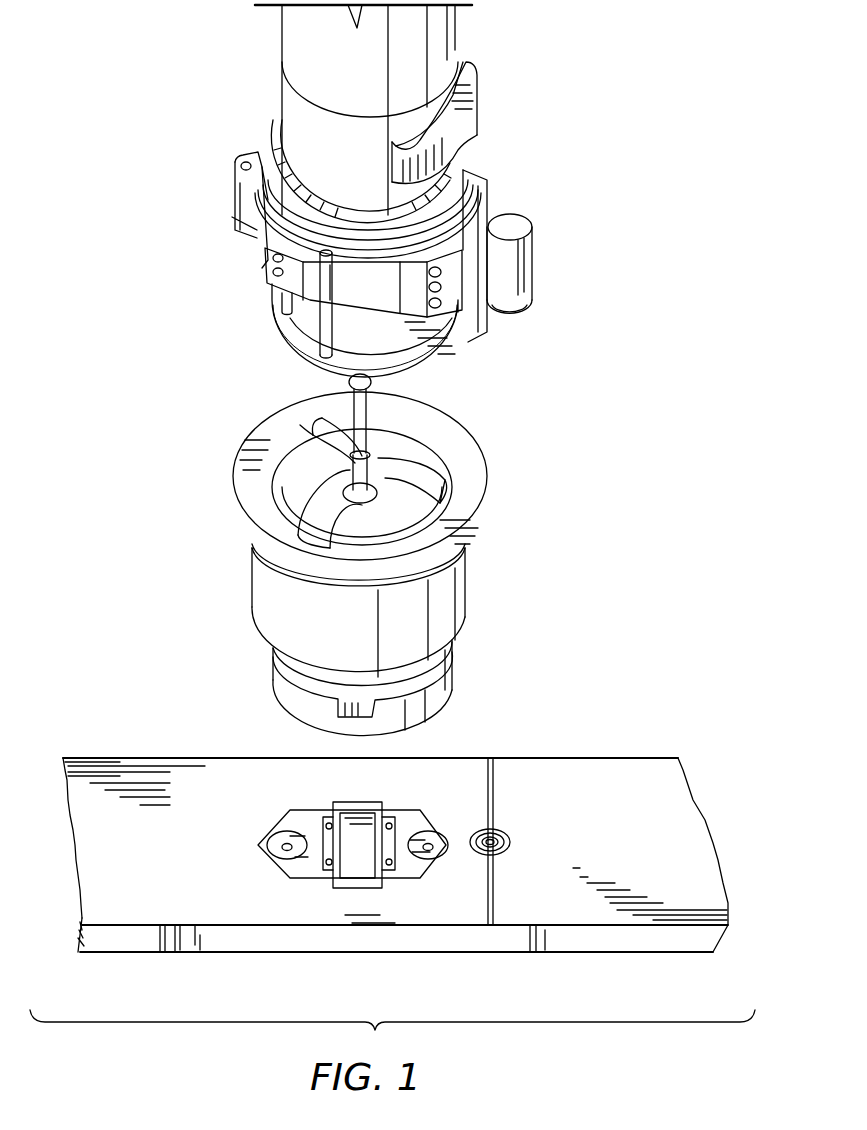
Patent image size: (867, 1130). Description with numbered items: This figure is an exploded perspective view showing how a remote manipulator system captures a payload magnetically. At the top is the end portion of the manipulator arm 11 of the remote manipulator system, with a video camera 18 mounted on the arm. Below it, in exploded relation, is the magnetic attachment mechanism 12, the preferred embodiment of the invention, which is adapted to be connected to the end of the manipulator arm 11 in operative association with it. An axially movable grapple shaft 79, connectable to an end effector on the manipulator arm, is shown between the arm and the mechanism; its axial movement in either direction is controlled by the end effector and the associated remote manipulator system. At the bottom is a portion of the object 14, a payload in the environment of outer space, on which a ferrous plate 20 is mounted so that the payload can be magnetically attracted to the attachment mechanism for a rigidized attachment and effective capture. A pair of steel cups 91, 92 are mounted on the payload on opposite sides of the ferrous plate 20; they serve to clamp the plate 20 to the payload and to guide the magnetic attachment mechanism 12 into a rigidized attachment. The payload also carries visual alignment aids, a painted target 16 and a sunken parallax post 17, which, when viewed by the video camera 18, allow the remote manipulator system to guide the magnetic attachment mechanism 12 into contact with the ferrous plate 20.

The manipulator arm 11 is at (262, 316).
The magnetic attachment mechanism 12 is at (476, 583).
The object 14 is at (170, 754).
The painted target 16 is at (500, 803).
The sunken parallax post 17 is at (510, 842).
The video camera 18 is at (533, 262).
The ferrous plate 20 is at (345, 880).
The grapple shaft 79 is at (372, 403).
The steel cup 91 is at (270, 841).
The steel cup 92 is at (442, 838).